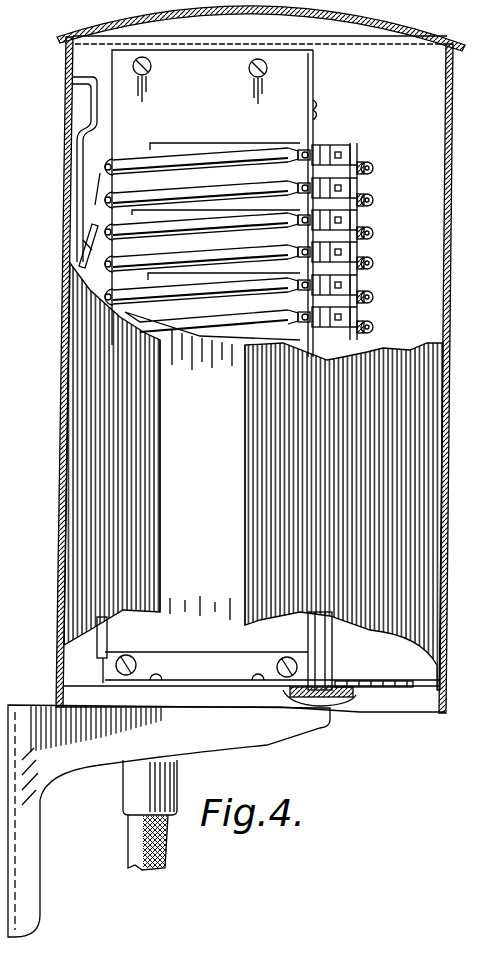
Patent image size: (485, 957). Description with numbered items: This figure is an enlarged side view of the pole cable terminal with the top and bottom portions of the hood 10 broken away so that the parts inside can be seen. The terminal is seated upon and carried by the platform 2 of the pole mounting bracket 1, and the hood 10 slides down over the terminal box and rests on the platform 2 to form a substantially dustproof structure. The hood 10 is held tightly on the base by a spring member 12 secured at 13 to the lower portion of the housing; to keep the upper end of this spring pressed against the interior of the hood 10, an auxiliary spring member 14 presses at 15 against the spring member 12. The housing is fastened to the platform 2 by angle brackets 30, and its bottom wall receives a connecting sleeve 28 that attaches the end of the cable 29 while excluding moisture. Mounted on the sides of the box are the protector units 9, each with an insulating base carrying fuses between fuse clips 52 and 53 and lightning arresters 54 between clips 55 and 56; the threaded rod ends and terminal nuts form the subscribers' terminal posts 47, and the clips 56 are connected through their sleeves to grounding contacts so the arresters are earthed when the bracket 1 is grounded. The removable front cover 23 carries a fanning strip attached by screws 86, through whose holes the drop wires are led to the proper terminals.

The mounting bracket 1 is at (33, 754).
The platform 2 is at (401, 690).
The protector units 9 is at (196, 243).
The hood 10 is at (66, 58).
The spring member 12 is at (78, 84).
The securing point of spring member 13 is at (64, 656).
The auxiliary spring member 14 is at (100, 376).
The pressing point of auxiliary spring member 15 is at (76, 265).
The removable front cover 23 is at (316, 83).
The connecting sleeve 28 is at (128, 790).
The cable 29 is at (135, 843).
The angle brackets 30 is at (233, 658).
The subscribers' terminal post 47 is at (378, 200).
The fuse clips 52 is at (92, 220).
The fuse clips 53 is at (302, 151).
The lightning arresters 54 is at (354, 153).
The lightning arrester clips 55 is at (323, 196).
The lightning arrester clips 56 is at (337, 147).
The screws 86 is at (212, 197).